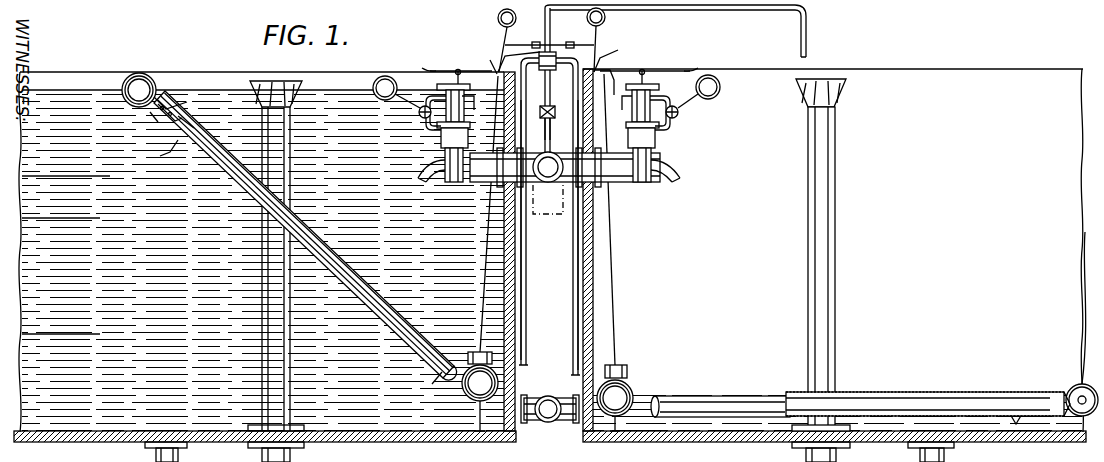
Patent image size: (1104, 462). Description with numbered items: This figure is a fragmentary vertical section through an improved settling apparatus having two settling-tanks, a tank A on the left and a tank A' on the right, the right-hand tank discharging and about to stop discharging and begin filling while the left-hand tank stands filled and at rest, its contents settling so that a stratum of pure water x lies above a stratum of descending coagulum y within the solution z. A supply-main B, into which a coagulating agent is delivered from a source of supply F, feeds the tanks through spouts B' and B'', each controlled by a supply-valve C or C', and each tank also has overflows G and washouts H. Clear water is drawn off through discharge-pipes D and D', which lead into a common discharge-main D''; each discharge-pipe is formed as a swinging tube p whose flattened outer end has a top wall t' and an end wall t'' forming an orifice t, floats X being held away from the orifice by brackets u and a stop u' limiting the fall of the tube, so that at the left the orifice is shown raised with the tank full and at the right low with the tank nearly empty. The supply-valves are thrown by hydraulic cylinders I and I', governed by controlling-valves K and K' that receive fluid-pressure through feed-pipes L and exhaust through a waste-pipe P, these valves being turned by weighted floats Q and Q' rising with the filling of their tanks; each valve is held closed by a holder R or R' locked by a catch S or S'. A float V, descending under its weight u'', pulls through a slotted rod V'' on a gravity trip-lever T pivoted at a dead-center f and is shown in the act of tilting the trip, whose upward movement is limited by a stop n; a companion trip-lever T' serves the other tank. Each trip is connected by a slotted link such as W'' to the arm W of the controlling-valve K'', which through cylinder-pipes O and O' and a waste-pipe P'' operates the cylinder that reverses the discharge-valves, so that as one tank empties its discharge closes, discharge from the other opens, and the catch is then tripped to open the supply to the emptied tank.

The tank A is at (834, 243).
The tank A' is at (265, 244).
The stratum of pure water x is at (22, 176).
The stratum of descending coagulum y is at (22, 218).
The solution z is at (22, 334).
The overflows G is at (262, 292).
The washouts H is at (538, 452).
The floats X is at (122, 91).
The discharge-pipe D is at (928, 391).
The discharge-pipe D' is at (305, 235).
The discharge-main D'' is at (550, 398).
The orifice t is at (609, 239).
The top wall t' is at (610, 258).
The end wall t'' is at (140, 127).
The brackets u is at (624, 228).
The stop u' is at (586, 300).
The weight u'' is at (765, 398).
The float V is at (549, 398).
The slotted rod V'' is at (550, 219).
The swinging tube p is at (440, 376).
The supply-main B is at (565, 156).
The spout B' is at (683, 164).
The spout B'' is at (415, 167).
The source of supply for coagulating agent F is at (550, 192).
The waste-pipe P'' is at (678, 30).
The controlling-valve K'' is at (559, 79).
The feed-pipes L is at (551, 123).
The stop n is at (556, 210).
The cylinder-pipe O is at (564, 235).
The cylinder-pipe O' is at (537, 230).
The trip-lever T is at (602, 40).
The trip-lever T' is at (497, 40).
The arm W is at (515, 63).
The slotted link W'' is at (549, 35).
The dead-center f is at (611, 65).
The supply-valve C is at (629, 133).
The supply-valve C' is at (462, 133).
The catch S is at (645, 65).
The catch S' is at (461, 64).
The holder R is at (693, 57).
The holder R' is at (416, 57).
The controlling-valve K is at (678, 127).
The controlling-valve K' is at (423, 120).
The waste-pipe P is at (678, 113).
The float Q is at (708, 91).
The float Q' is at (389, 97).
The cylinder I is at (621, 101).
The cylinder I' is at (473, 108).